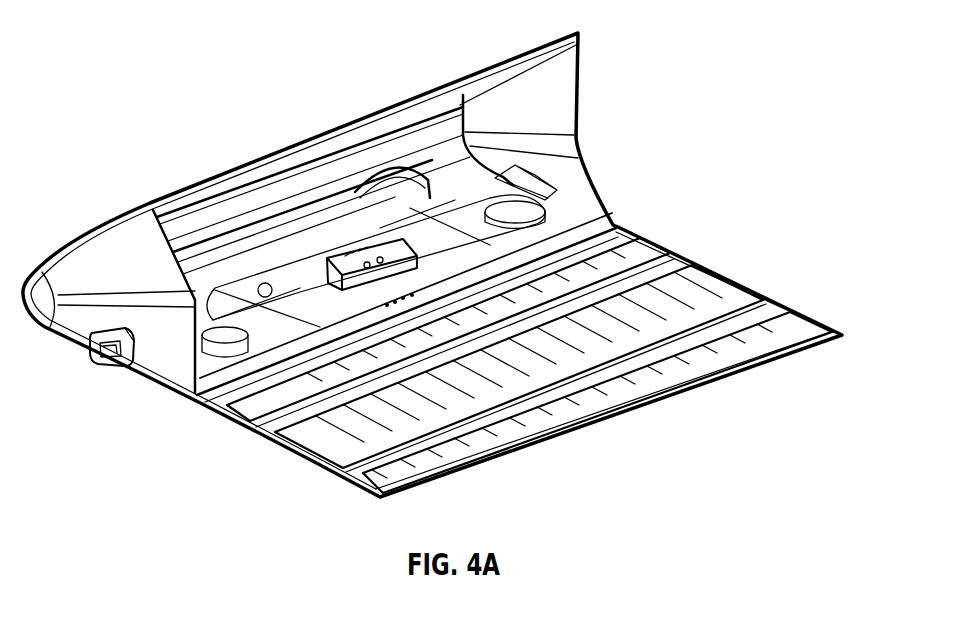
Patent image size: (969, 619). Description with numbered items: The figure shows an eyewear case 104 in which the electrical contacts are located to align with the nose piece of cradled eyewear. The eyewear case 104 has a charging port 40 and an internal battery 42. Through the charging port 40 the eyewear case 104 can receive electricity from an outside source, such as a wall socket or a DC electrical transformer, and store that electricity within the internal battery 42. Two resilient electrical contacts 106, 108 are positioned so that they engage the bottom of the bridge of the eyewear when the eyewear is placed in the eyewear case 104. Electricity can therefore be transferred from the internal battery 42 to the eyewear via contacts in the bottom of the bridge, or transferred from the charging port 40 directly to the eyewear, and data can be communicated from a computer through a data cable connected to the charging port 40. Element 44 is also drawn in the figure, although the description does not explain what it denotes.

The eyewear case 104 is at (838, 28).
The resilient electrical contact 106 is at (366, 262).
The resilient electrical contact 108 is at (380, 257).
The receptacle 44 is at (480, 243).
The internal battery 42 is at (265, 298).
The charging port 40 is at (97, 358).